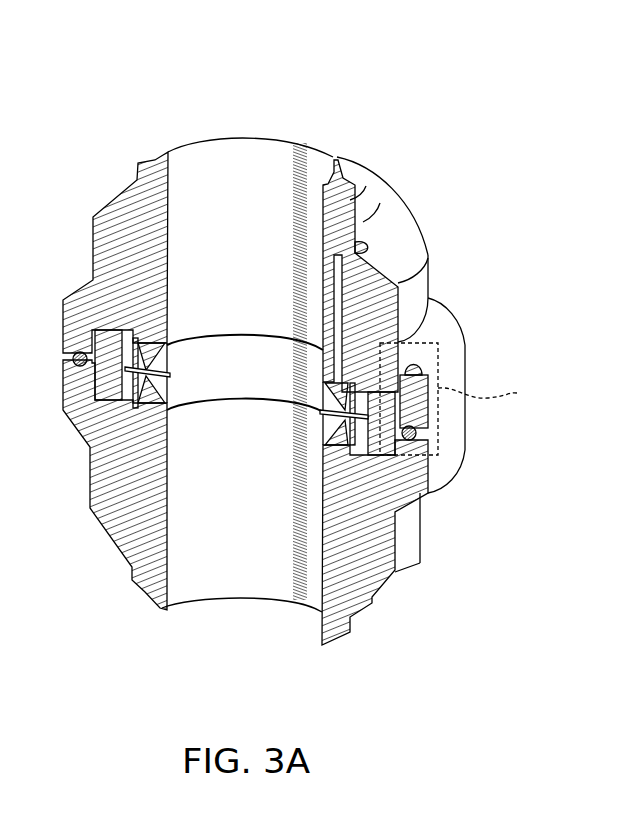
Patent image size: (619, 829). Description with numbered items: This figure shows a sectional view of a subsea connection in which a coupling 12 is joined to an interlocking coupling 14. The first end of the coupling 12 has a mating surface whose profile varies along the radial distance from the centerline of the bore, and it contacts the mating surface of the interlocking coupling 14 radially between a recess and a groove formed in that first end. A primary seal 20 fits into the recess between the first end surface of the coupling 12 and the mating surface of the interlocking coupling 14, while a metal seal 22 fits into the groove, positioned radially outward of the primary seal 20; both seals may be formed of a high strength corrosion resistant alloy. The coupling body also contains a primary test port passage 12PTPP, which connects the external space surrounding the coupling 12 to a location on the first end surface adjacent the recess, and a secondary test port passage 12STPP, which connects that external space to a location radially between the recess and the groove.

The coupling 12 is at (264, 186).
The primary test port passage 12PTPP is at (377, 263).
The secondary test port passage 12STPP is at (416, 366).
The interlocking coupling 14 is at (198, 578).
The primary seal 20 is at (211, 381).
The metal seal 22 is at (423, 432).